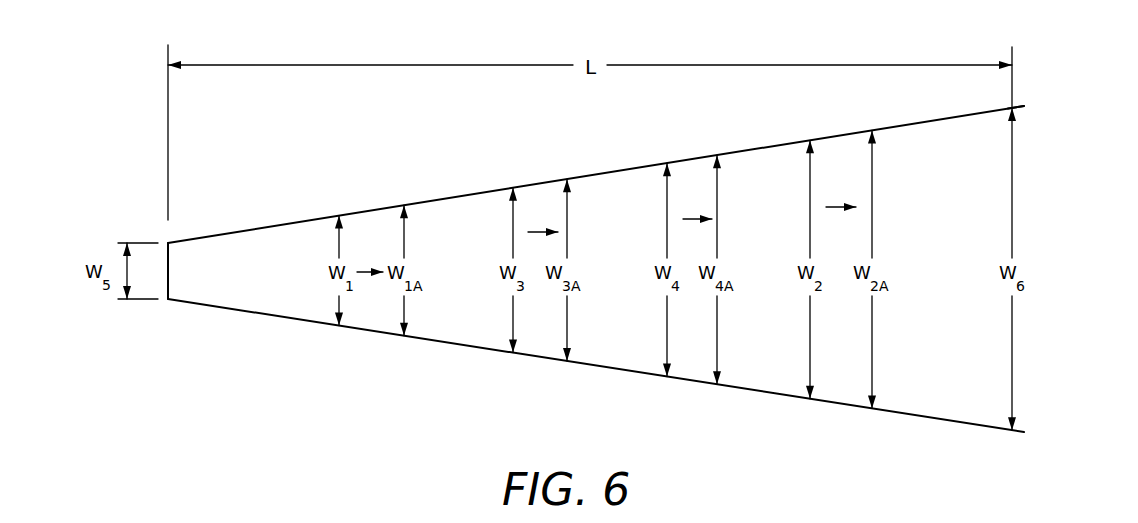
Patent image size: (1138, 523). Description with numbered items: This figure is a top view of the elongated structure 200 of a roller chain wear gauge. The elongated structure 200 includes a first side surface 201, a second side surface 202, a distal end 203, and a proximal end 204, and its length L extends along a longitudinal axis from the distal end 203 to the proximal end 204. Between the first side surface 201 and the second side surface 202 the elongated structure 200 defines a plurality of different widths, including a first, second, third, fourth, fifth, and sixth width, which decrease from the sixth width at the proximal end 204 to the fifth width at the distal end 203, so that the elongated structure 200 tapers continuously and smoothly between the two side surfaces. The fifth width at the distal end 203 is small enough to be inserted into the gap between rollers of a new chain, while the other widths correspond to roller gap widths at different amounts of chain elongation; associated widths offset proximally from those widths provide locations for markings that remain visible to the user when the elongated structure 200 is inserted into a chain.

The elongated structure 200 is at (106, 86).
The first side surface 201 is at (456, 344).
The second side surface 202 is at (253, 238).
The distal end 203 is at (167, 271).
The proximal end 204 is at (1014, 106).